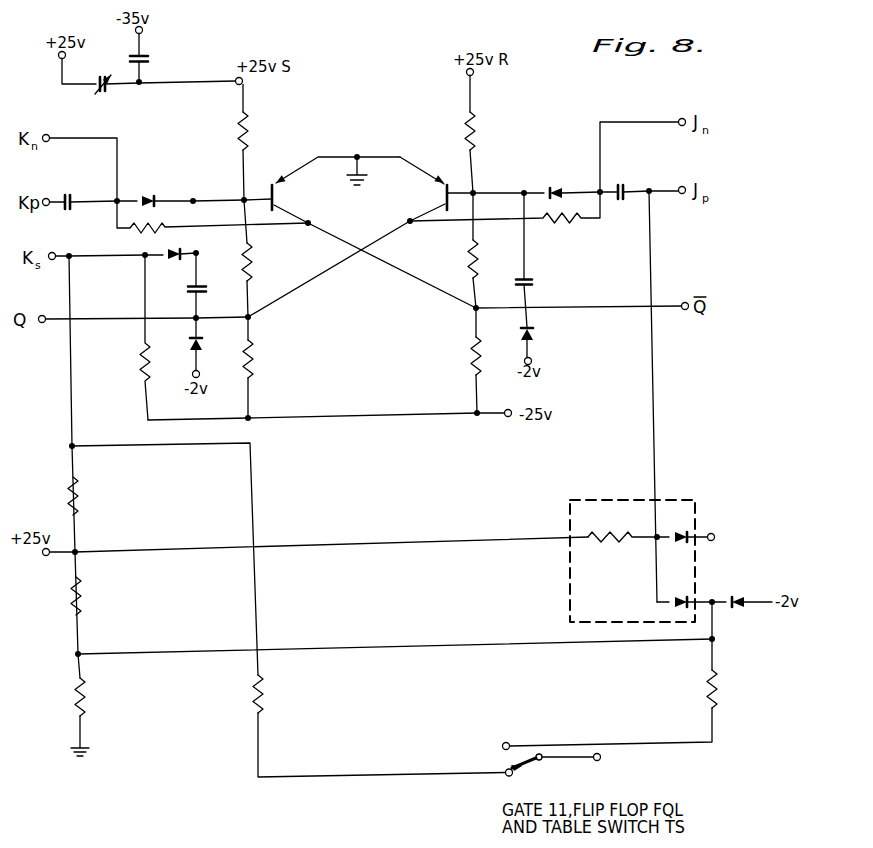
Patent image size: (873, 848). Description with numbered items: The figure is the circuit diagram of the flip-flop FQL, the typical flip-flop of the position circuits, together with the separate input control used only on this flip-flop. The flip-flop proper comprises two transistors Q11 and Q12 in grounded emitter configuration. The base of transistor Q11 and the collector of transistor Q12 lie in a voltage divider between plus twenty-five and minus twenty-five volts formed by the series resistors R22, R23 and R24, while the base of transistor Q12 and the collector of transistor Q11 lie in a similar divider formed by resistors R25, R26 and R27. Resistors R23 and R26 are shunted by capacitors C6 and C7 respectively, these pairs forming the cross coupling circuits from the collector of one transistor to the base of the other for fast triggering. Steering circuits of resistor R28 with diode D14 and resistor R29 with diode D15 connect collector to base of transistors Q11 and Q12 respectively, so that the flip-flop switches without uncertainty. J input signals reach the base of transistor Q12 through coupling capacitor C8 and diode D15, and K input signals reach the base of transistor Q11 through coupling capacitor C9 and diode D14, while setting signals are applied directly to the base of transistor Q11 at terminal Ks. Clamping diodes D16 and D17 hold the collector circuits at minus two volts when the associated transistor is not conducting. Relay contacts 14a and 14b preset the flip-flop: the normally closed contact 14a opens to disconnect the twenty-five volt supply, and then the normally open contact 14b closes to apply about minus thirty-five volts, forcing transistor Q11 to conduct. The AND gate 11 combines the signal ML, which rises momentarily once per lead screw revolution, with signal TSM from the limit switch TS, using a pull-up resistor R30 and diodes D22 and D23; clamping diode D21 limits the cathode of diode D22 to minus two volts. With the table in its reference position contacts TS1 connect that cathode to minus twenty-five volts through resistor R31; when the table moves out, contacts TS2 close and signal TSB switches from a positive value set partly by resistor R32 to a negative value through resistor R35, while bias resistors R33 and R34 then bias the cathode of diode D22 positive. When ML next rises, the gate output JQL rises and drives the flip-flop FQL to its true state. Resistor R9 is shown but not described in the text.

The AND gate 11 is at (627, 548).
The normally closed contact 14a is at (94, 73).
The normally open contact 14b is at (161, 48).
The resistor R9 is at (131, 337).
The resistor R22 is at (266, 128).
The resistor R23 is at (268, 262).
The resistor R24 is at (269, 359).
The resistor R25 is at (494, 127).
The resistor R26 is at (495, 259).
The resistor R27 is at (458, 356).
The resistor R28 is at (212, 227).
The resistor R29 is at (505, 219).
The pull-up resistor R30 is at (628, 526).
The resistor R31 is at (736, 689).
The resistor R32 is at (94, 496).
The bias resistor R33 is at (97, 596).
The bias resistor R34 is at (100, 697).
The resistor R35 is at (279, 694).
The capacitor C6 is at (211, 290).
The capacitor C7 is at (538, 284).
The coupling capacitor C8 is at (626, 181).
The coupling capacitor C9 is at (73, 189).
The diode D14 is at (150, 186).
The diode D15 is at (555, 182).
The clamping diode D16 is at (217, 343).
The clamping diode D17 is at (548, 333).
The clamping diode D21 is at (747, 616).
The diode D22 is at (679, 591).
The diode D23 is at (679, 526).
The transistor Q11 is at (374, 232).
The transistor Q12 is at (360, 237).
The flip-flop FQL is at (352, 343).
The output voltage signal of AND gate JQL is at (656, 449).
The lead screw revolution signal ML is at (735, 526).
The limit switch TS is at (558, 758).
The switch contacts TS1 is at (506, 742).
The switch contacts TS2 is at (508, 777).
The switch signal TSM is at (610, 738).
The switch bias signal TSB is at (408, 756).